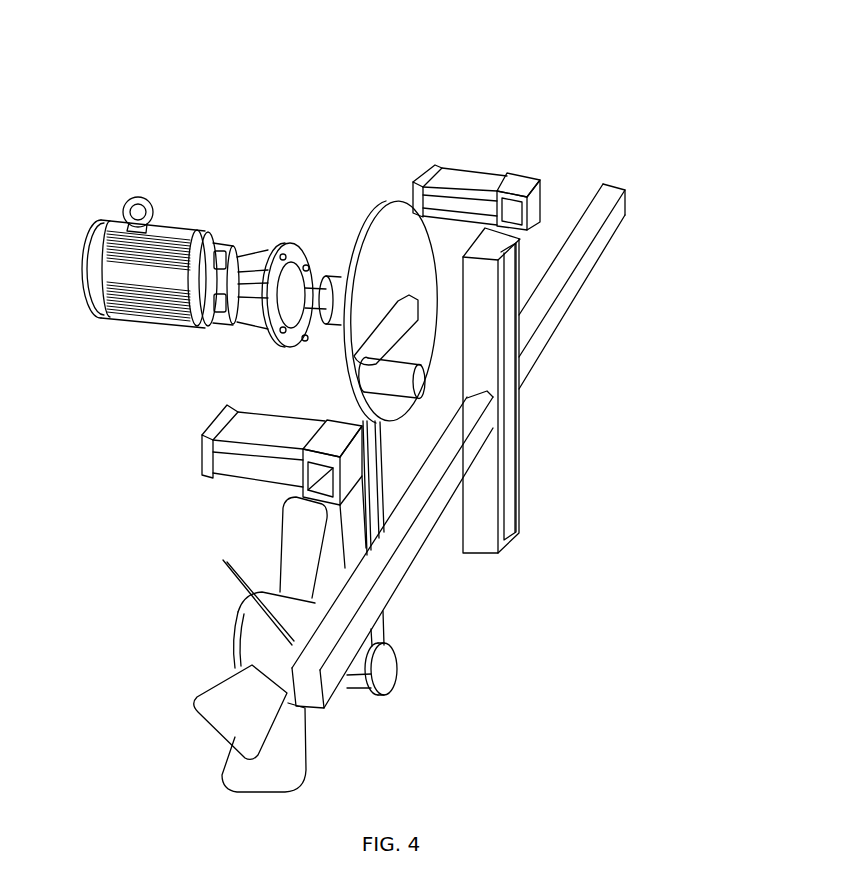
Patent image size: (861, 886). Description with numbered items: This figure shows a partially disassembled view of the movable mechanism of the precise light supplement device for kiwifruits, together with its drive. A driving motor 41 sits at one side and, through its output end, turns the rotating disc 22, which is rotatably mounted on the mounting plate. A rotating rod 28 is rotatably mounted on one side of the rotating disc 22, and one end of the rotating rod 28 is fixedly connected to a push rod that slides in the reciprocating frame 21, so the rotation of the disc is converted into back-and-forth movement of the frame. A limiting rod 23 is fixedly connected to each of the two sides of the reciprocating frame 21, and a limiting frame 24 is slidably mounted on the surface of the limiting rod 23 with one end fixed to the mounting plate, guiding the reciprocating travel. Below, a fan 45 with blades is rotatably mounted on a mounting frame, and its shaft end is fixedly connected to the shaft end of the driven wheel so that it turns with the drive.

The driving motor 41 is at (140, 227).
The rotating rod 28 is at (400, 323).
The rotating disc 22 is at (412, 223).
The limiting frame 24 is at (500, 193).
The limiting rod 23 is at (600, 262).
The reciprocating frame 21 is at (500, 347).
The fan 45 is at (233, 674).